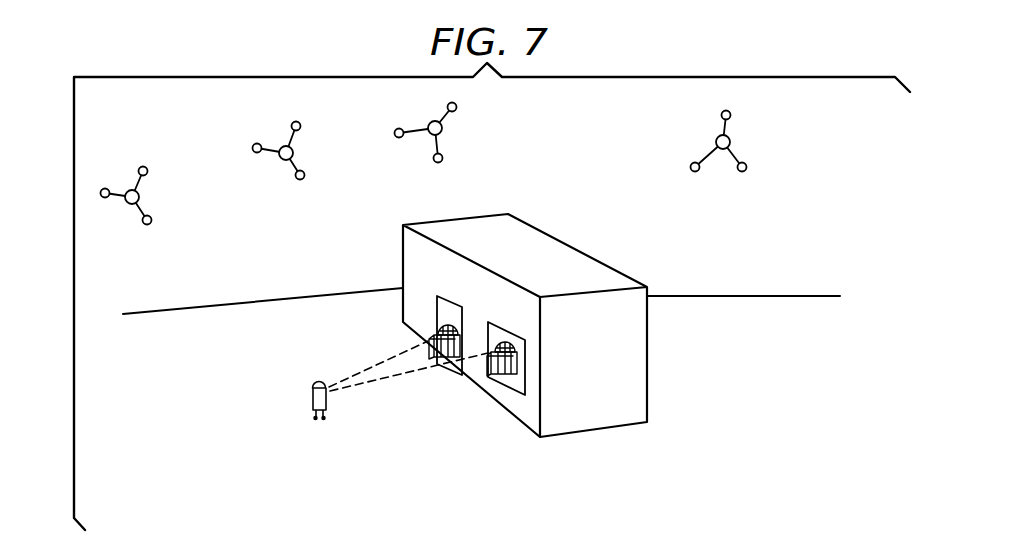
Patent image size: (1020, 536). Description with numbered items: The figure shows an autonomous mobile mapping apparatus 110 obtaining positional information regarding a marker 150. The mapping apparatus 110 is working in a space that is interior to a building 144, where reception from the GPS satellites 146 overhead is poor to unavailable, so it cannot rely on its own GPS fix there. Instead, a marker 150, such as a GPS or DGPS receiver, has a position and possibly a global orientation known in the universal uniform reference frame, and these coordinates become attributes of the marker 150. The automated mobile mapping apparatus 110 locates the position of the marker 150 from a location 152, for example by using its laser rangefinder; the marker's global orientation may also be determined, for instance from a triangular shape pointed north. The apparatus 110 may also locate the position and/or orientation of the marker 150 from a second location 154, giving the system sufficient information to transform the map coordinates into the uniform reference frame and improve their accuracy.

The GPS satellite 146 is at (139, 196).
The building 144 is at (522, 242).
The autonomous mobile mapping apparatus 110 is at (428, 341).
The marker 150 is at (312, 387).
The location 152 is at (376, 364).
The second location 154 is at (406, 371).